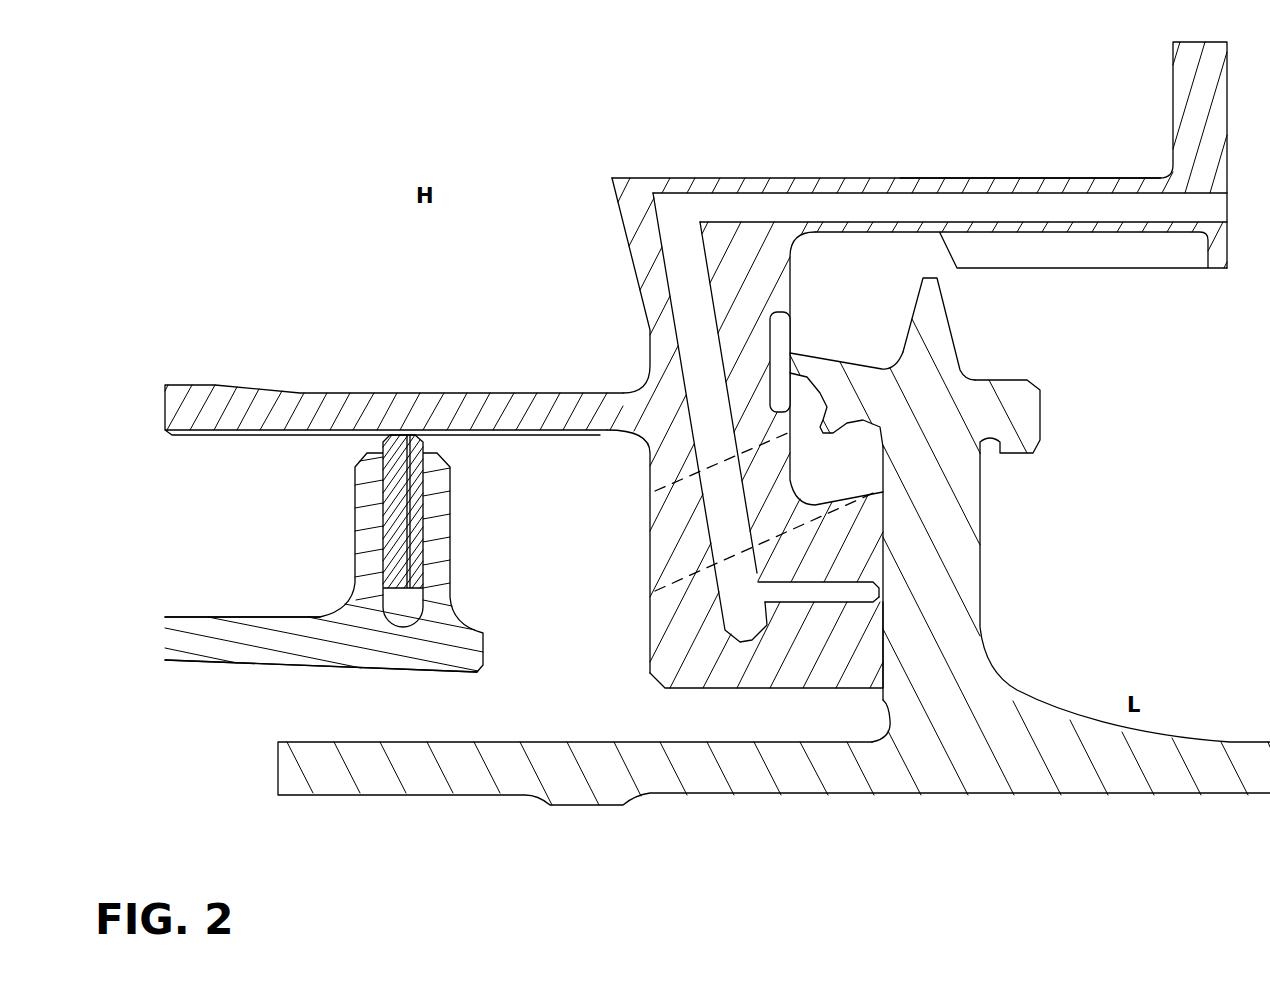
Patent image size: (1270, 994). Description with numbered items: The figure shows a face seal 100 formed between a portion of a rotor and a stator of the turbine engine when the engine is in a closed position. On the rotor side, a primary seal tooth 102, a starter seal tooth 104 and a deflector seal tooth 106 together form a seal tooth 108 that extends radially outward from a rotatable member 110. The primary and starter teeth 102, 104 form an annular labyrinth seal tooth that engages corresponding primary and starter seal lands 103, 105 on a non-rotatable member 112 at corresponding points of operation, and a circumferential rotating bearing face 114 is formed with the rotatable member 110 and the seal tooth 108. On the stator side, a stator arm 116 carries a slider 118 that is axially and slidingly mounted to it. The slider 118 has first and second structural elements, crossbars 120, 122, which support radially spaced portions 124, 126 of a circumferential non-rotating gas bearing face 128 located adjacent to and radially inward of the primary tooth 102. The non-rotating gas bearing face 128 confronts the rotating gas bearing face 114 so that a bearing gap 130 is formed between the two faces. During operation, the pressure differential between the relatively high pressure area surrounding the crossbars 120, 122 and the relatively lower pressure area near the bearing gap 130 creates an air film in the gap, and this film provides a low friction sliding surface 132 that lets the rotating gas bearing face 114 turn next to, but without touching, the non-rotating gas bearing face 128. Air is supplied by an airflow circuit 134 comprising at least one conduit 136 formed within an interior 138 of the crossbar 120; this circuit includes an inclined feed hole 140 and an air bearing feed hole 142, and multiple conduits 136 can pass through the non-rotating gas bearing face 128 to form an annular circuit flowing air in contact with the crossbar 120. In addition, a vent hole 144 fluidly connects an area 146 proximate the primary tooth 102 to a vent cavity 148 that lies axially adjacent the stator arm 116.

The face seal 100 is at (702, 42).
The primary seal tooth 102 is at (840, 383).
The primary seal land 103 is at (780, 333).
The starter seal tooth 104 is at (933, 323).
The starter seal land 105 is at (1105, 250).
The deflector seal tooth 106 is at (830, 422).
The seal tooth 108 is at (895, 413).
The rotatable member 110 is at (958, 757).
The non-rotatable member 112 is at (683, 607).
The rotating bearing face 114 is at (860, 647).
The stator arm 116 is at (288, 648).
The slider 118 is at (560, 358).
The crossbar 120 is at (1078, 173).
The crossbar 122 is at (330, 388).
The radially spaced portion 124 is at (648, 268).
The radially spaced portion 126 is at (668, 438).
The non-rotating gas bearing face 128 is at (893, 612).
The bearing gap 130 is at (878, 698).
The low friction sliding surface 132 is at (883, 590).
The airflow circuit 134 is at (808, 218).
The conduit 136 is at (890, 207).
The interior 138 is at (1018, 185).
The inclined feed hole 140 is at (688, 247).
The air bearing feed hole 142 is at (800, 593).
The vent hole 144 is at (670, 523).
The area proximate the primary tooth 146 is at (843, 480).
The vent cavity 148 is at (520, 562).